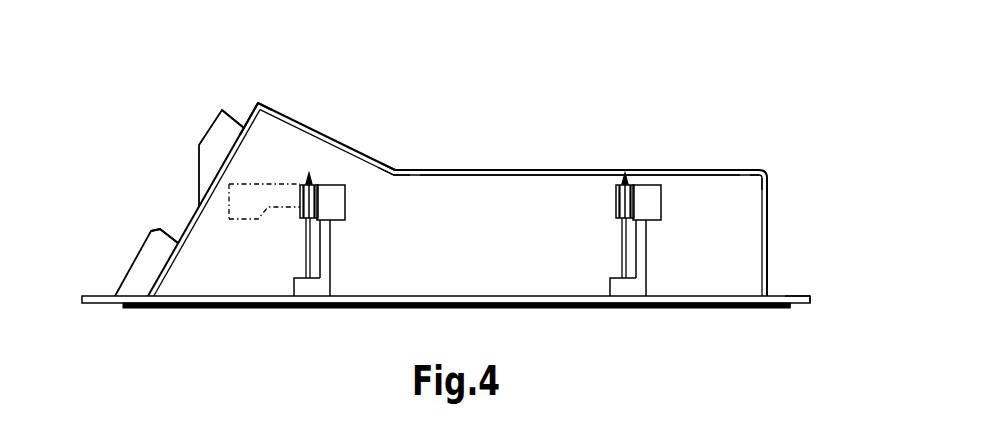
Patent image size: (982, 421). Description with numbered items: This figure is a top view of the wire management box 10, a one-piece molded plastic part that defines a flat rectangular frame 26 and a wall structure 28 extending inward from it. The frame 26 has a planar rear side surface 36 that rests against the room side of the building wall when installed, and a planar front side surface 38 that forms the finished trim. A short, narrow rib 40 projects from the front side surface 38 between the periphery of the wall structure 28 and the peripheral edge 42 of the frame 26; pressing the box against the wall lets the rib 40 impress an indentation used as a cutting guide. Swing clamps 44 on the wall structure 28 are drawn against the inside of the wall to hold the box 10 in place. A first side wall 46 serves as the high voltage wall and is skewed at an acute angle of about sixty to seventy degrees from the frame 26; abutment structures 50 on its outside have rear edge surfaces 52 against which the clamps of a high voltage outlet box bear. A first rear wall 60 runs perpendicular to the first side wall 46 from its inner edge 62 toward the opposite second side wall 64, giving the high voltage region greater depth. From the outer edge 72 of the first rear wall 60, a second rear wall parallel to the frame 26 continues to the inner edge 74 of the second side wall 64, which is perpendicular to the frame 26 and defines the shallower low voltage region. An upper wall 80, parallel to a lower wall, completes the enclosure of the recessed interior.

The wire management box 10 is at (112, 105).
The frame 26 is at (485, 296).
The wall structure 28 is at (694, 170).
The rear side surface 36 is at (795, 295).
The front side surface 38 is at (800, 306).
The rib 40 is at (697, 306).
The peripheral edge 42 is at (811, 300).
The swing clamps 44 is at (345, 205).
The first side wall 46 is at (188, 220).
The abutment structures 50 is at (220, 127).
The rear edge surfaces 52 is at (207, 130).
The first rear wall 60 is at (314, 128).
The inner edge 62 is at (258, 101).
The second side wall 64 is at (767, 222).
The outer edge 72 is at (400, 168).
The inner edge 74 is at (766, 169).
The upper wall 80 is at (508, 197).